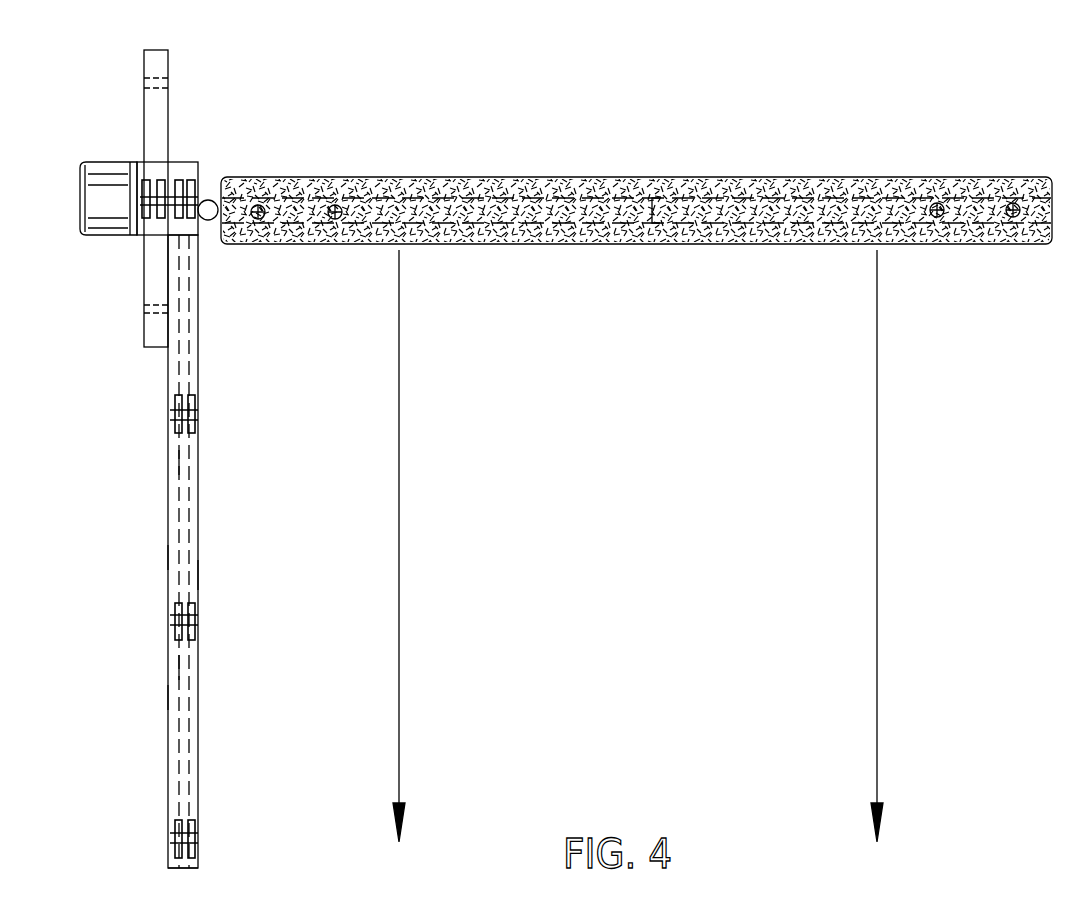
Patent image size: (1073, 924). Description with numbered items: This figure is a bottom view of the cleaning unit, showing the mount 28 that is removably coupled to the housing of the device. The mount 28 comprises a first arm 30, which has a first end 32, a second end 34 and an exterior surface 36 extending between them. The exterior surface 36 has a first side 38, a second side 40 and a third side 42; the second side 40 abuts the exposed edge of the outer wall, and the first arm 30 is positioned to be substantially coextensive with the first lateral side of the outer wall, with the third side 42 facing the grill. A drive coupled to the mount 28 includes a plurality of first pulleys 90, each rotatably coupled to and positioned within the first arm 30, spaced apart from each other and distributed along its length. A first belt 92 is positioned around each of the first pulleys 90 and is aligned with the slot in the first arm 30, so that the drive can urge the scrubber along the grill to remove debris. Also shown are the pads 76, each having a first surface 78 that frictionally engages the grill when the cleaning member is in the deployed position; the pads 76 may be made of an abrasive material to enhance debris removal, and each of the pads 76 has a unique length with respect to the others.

The mount 28 is at (184, 462).
The first arm 30 is at (198, 505).
The first end 32 is at (181, 162).
The second end 34 is at (178, 868).
The exterior surface 36 is at (168, 698).
The first side 38 is at (168, 558).
The second side 40 is at (177, 667).
The third side 42 is at (198, 572).
The pads 76 is at (636, 171).
The first surface 78 is at (747, 213).
The first pulleys 90 is at (192, 182).
The first belt 92 is at (178, 463).